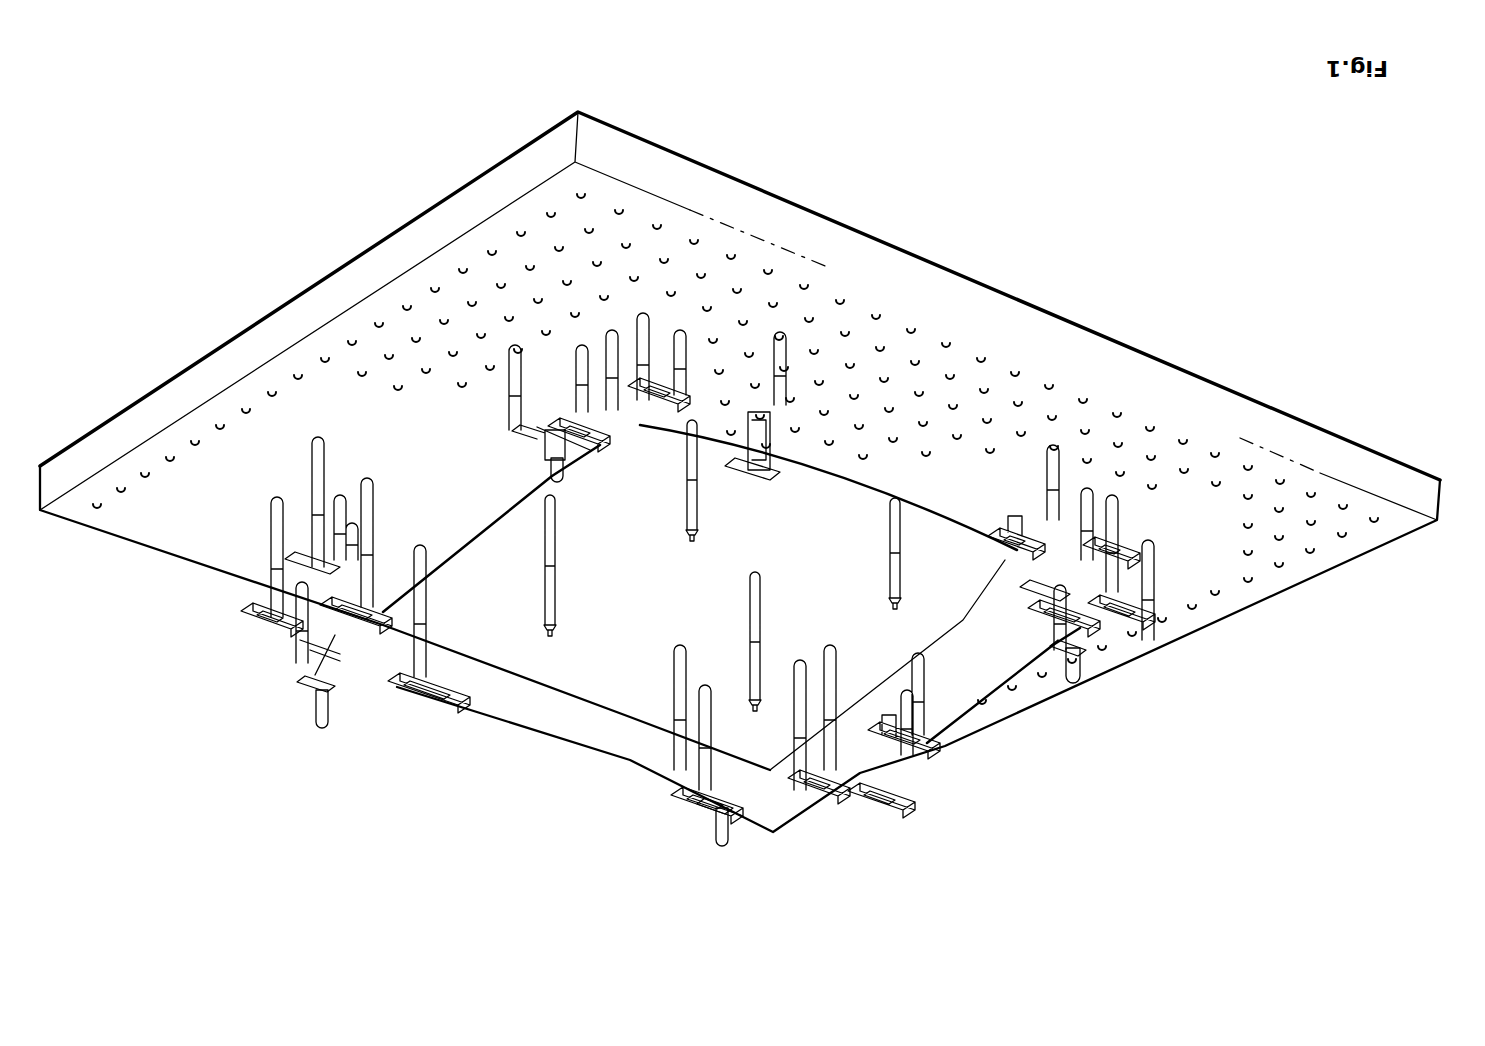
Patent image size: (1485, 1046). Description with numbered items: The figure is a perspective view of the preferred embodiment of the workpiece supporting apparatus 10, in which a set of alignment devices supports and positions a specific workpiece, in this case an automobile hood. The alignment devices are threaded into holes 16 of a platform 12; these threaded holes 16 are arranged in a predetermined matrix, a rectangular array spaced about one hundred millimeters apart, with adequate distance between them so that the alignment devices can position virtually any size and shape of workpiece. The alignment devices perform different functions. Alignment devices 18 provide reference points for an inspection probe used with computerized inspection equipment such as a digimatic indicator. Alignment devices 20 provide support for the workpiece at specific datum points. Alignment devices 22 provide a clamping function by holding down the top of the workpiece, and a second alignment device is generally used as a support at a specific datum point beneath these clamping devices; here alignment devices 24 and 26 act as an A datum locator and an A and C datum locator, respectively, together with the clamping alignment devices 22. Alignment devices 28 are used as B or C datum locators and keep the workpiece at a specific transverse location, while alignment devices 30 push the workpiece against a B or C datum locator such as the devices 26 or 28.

The workpiece supporting apparatus 10 is at (212, 810).
The platform 12 is at (1280, 592).
The holes 16 is at (1278, 483).
The alignment devices 18 is at (322, 470).
The alignment devices 20 is at (686, 497).
The alignment devices 22 is at (540, 455).
The alignment device 24 is at (346, 640).
The alignment device 26 is at (580, 372).
The alignment devices 28 is at (688, 385).
The alignment devices 30 is at (328, 706).